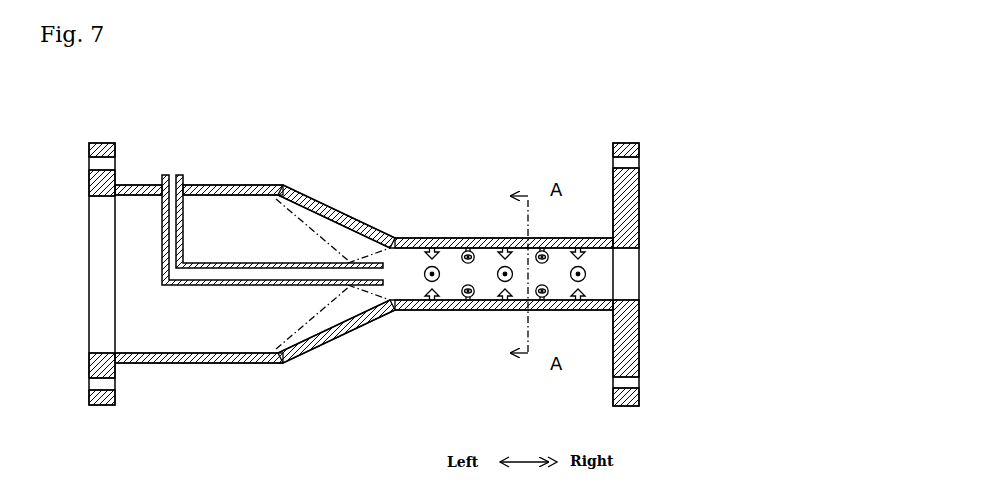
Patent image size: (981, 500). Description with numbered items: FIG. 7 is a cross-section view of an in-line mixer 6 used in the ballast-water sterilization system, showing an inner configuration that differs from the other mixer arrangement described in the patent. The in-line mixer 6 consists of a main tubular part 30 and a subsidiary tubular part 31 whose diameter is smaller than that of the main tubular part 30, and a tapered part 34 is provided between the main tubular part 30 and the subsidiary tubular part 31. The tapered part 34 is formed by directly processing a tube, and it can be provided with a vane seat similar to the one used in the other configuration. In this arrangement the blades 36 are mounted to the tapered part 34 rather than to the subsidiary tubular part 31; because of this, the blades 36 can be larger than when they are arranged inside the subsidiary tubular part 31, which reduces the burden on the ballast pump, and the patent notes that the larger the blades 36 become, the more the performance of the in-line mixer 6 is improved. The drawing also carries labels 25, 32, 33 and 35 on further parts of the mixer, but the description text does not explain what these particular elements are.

The in-line mixer 6 is at (722, 127).
The annular flow passage 25 is at (188, 285).
The main tubular part 30 is at (233, 203).
The subsidiary tubular part 31 is at (493, 240).
The flange 32 is at (640, 143).
The inner supply tube 33 is at (173, 175).
The tapered part 34 is at (363, 242).
The injection nozzles 35 is at (430, 300).
The blades 36 is at (337, 243).